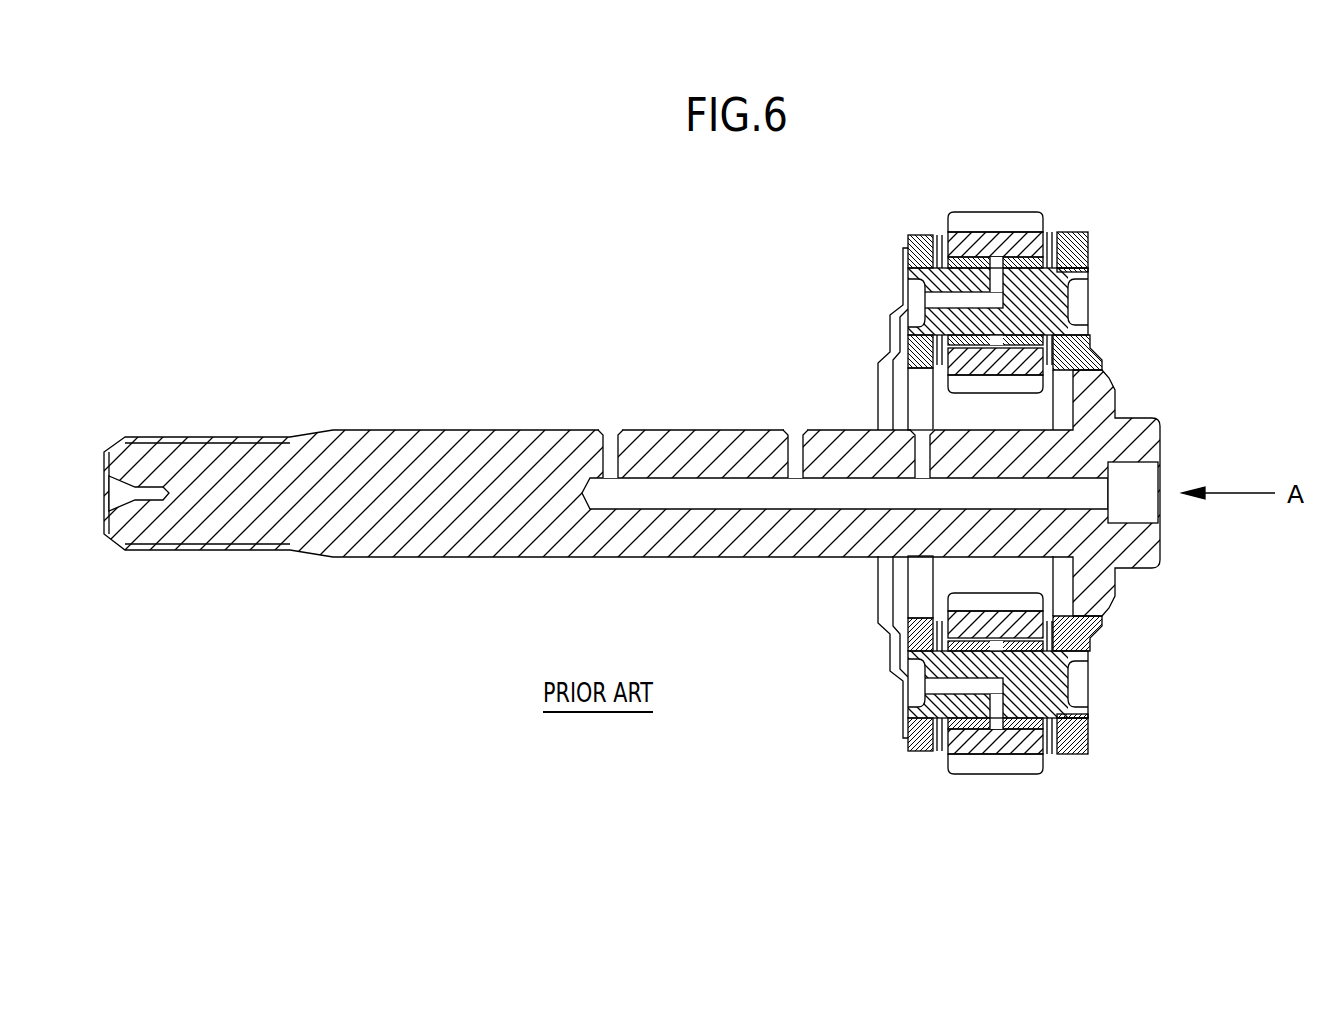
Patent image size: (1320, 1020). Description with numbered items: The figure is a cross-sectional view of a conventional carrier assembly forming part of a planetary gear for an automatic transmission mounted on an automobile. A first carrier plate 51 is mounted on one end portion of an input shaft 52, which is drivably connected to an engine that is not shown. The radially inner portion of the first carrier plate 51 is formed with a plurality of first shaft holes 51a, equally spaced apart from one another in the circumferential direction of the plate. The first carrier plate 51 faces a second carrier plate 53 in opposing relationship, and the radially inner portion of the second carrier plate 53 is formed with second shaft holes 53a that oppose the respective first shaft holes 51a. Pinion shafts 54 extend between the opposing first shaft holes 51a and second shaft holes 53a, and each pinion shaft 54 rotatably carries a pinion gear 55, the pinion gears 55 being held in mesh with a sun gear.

The first carrier plate 51 is at (1088, 238).
The first shaft holes 51a is at (1088, 272).
The input shaft 52 is at (680, 440).
The second carrier plate 53 is at (920, 233).
The second shaft holes 53a is at (903, 272).
The pinion shafts 54 is at (1057, 318).
The pinion gears 55 is at (1017, 240).